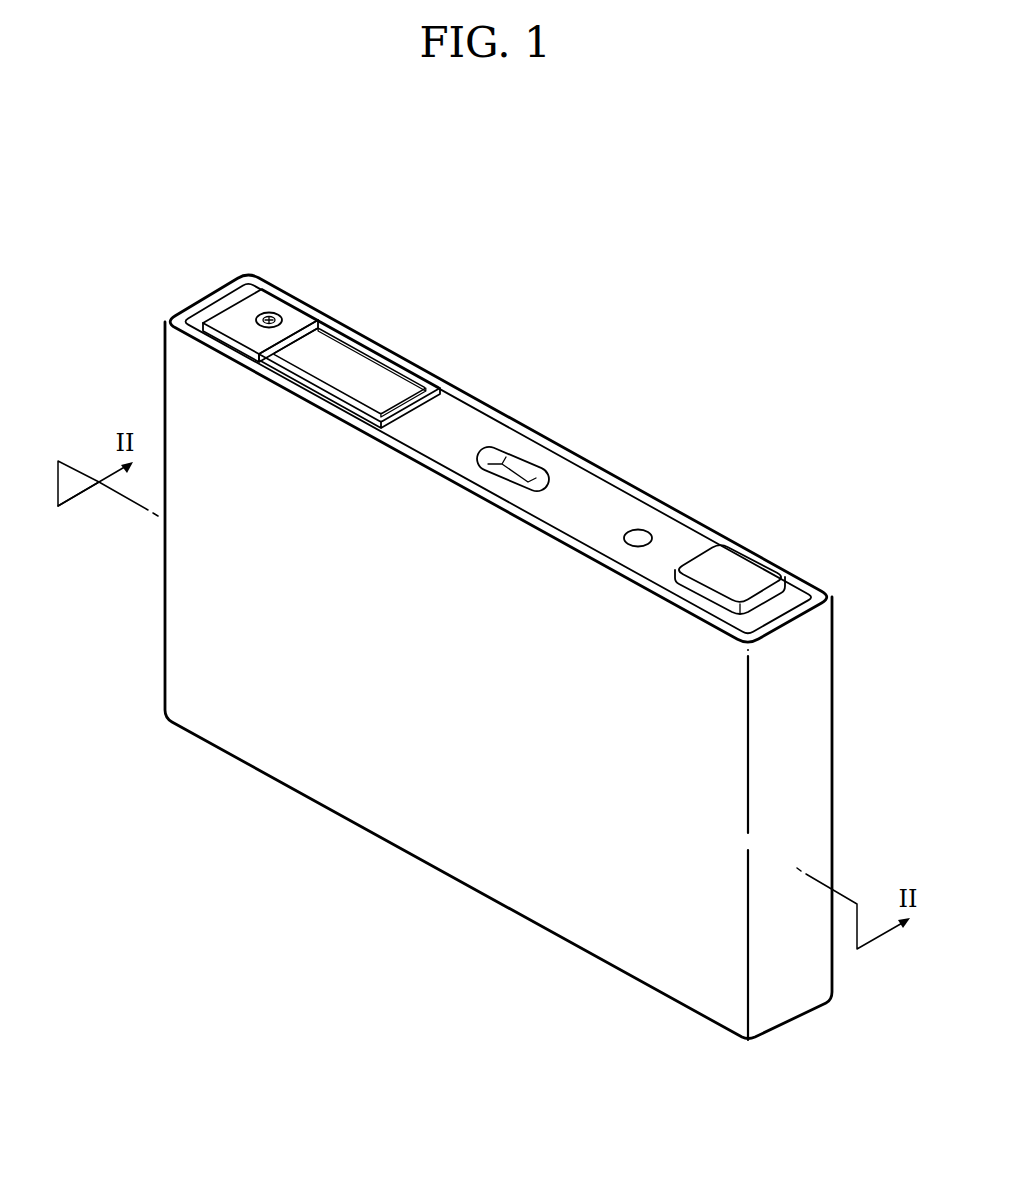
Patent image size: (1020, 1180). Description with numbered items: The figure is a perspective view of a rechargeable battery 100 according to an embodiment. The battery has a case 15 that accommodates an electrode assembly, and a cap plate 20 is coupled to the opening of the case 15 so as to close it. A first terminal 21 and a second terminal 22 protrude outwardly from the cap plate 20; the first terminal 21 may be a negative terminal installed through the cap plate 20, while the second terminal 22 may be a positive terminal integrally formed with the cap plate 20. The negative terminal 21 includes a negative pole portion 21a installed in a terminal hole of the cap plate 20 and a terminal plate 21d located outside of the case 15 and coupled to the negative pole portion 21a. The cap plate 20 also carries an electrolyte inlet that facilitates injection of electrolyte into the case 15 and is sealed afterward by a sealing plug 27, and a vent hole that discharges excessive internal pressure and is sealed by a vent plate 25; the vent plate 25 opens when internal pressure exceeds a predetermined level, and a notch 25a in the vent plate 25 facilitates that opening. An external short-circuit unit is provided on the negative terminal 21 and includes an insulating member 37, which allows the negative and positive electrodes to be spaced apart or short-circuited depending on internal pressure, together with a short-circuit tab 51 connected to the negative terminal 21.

The rechargeable battery 100 is at (598, 200).
The case 15 is at (441, 831).
The cap plate 20 is at (458, 418).
The first terminal 21 is at (253, 279).
The negative pole portion 21a is at (268, 311).
The terminal plate 21d is at (236, 312).
The second terminal 22 is at (752, 556).
The vent plate 25 is at (545, 435).
The notch 25a is at (528, 470).
The sealing plug 27 is at (638, 529).
The insulating member 37 is at (349, 354).
The short-circuit tab 51 is at (347, 375).